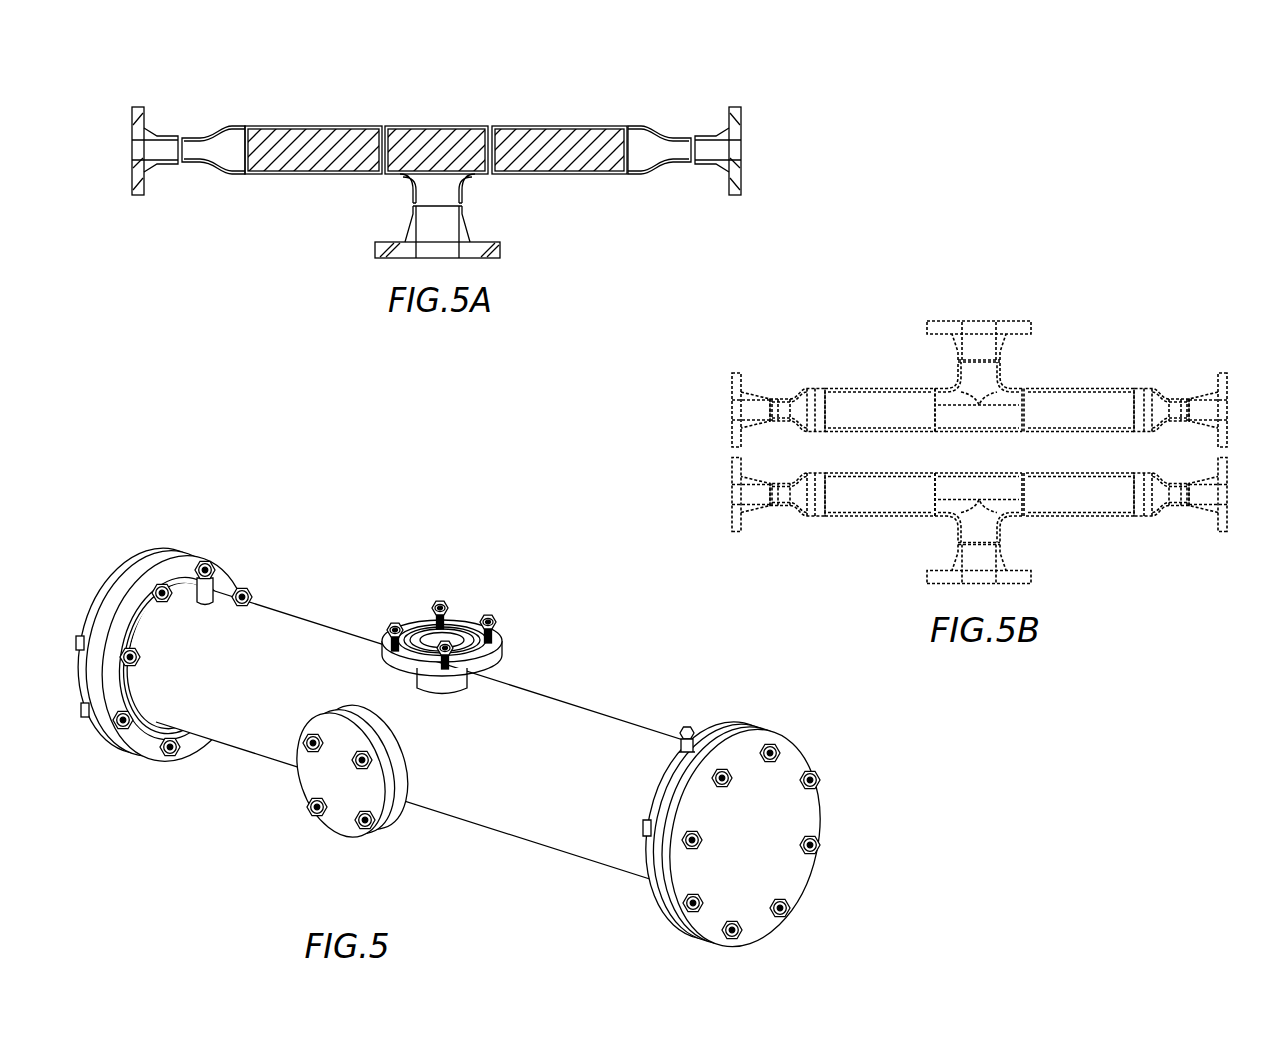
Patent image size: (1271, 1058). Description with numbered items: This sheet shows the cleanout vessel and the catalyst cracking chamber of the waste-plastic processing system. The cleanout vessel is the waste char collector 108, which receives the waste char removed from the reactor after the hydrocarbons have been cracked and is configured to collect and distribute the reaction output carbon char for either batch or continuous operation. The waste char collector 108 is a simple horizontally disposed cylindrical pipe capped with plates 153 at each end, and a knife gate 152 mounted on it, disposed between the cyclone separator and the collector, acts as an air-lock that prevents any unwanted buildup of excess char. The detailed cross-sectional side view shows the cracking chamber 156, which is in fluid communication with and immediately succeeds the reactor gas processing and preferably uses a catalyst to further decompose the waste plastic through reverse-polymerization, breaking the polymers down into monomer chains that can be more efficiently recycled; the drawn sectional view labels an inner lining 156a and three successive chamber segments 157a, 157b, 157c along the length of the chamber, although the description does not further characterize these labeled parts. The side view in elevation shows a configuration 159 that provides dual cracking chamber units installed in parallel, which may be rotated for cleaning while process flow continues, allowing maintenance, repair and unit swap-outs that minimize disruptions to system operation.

In FIG. 5, the waste char collector 108 is at (484, 700).
In FIG. 5, the knife gate 152 is at (455, 623).
In FIG. 5, the plates 153 is at (122, 573).
In FIG. 5A, the cracking chamber 156 is at (436, 167).
In FIG. 5A, the liner 156a is at (305, 157).
In FIG. 5A, the first conduit section 157a is at (305, 151).
In FIG. 5A, the second conduit section 157b is at (418, 125).
In FIG. 5A, the third conduit section 157c is at (528, 125).
In FIG. 5B, the configuration 159 is at (1006, 260).